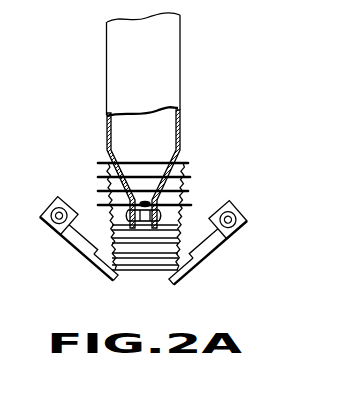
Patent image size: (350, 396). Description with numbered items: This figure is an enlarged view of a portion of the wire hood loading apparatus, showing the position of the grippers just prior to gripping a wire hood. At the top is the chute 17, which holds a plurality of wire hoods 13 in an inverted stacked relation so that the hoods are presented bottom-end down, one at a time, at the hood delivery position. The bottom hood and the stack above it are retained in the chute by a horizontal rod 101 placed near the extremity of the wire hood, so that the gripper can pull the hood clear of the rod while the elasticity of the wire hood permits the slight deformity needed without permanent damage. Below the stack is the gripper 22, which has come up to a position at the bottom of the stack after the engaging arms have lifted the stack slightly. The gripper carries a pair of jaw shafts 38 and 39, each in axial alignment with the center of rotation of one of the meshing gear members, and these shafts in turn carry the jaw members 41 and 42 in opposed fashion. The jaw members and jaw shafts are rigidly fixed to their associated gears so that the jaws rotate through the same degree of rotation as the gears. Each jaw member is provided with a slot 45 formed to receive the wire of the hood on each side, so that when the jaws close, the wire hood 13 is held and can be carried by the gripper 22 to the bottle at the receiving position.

The chute 17 is at (183, 73).
The wire hood 13 is at (184, 165).
The horizontal rod 101 is at (151, 204).
The gripper 22 is at (62, 233).
The jaw shaft 39 is at (59, 219).
The jaw member 42 is at (72, 246).
The slot 45 is at (95, 265).
The jaw shaft 38 is at (222, 241).
The jaw member 41 is at (231, 236).